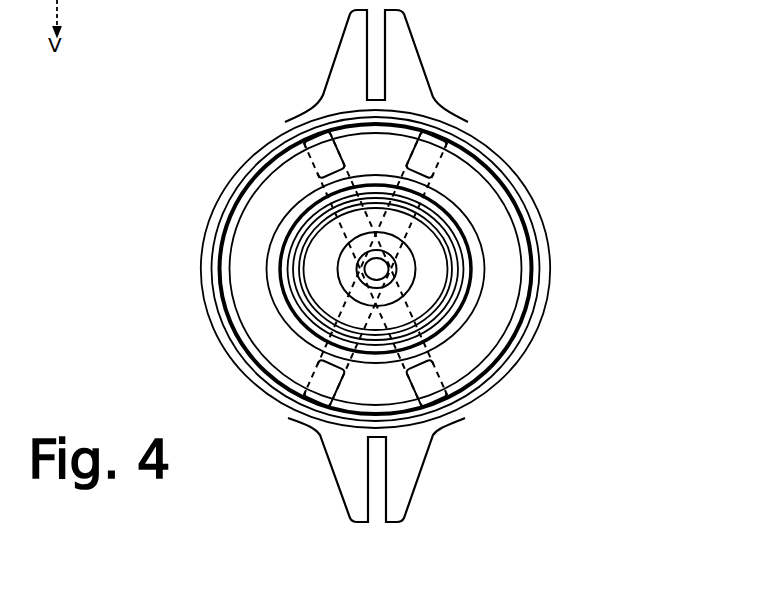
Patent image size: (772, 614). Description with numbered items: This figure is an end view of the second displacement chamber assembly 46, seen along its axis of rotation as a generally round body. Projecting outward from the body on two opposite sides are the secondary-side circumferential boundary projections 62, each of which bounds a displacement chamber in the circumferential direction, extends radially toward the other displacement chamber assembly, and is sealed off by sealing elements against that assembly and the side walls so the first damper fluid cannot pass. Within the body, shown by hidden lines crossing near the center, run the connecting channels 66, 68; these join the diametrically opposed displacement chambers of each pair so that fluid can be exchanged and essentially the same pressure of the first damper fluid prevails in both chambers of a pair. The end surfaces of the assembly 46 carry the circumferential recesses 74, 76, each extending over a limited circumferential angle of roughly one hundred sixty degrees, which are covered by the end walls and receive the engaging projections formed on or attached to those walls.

The second displacement chamber assembly 46 is at (540, 342).
The secondary-side circumferential boundary projection 62 is at (413, 40).
The connecting channel 66 is at (440, 137).
The connecting channel 68 is at (290, 127).
The circumferential recess 74 is at (252, 315).
The circumferential recess 76 is at (508, 238).